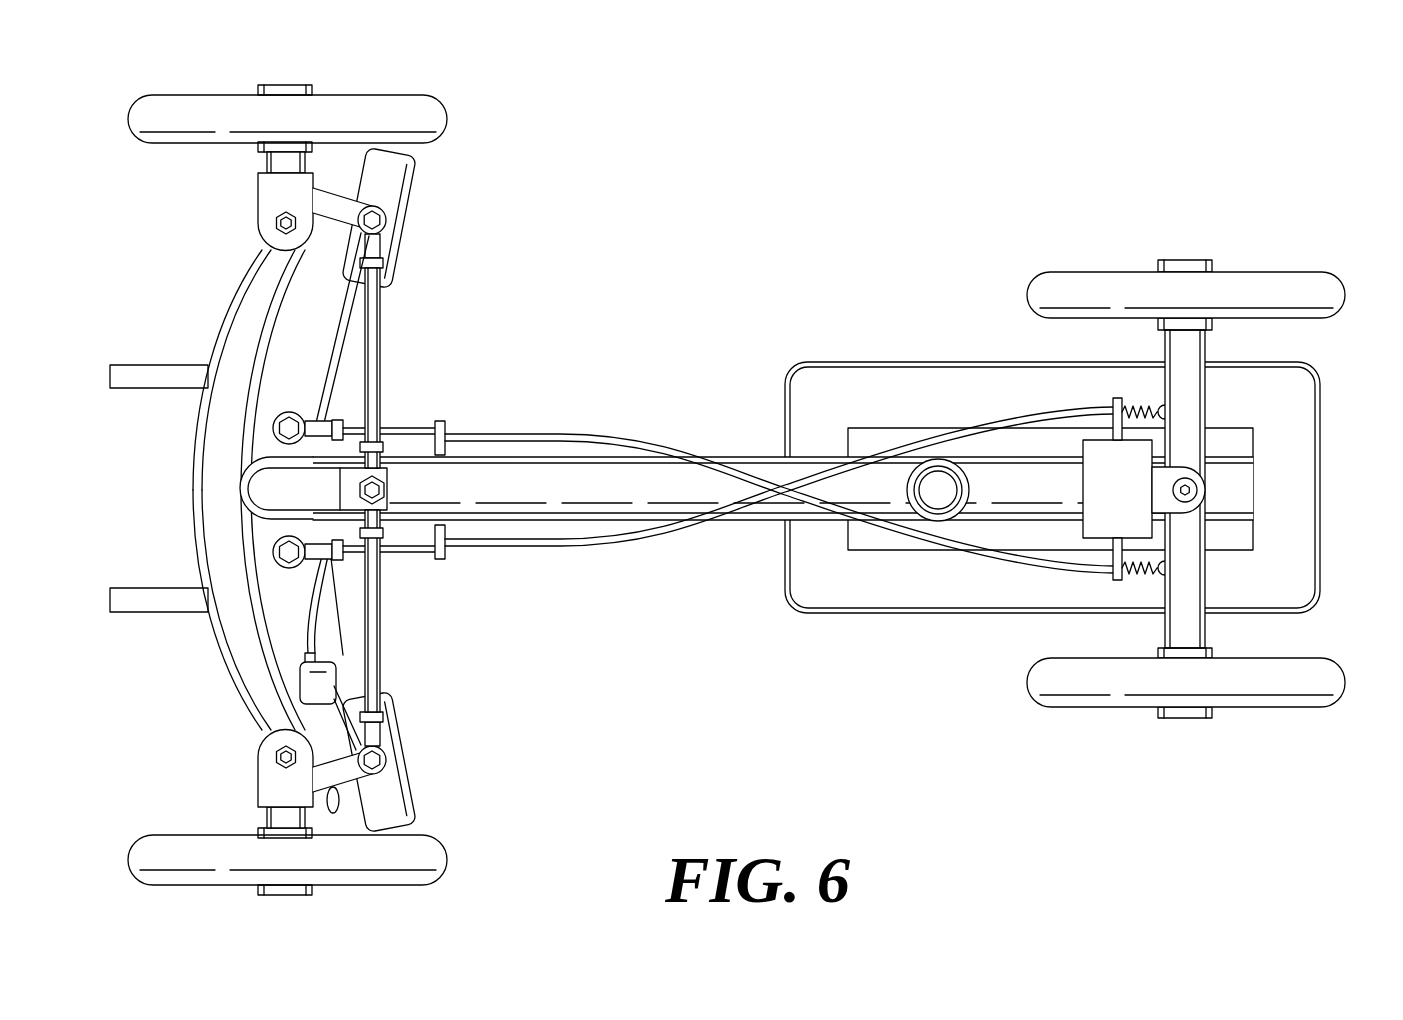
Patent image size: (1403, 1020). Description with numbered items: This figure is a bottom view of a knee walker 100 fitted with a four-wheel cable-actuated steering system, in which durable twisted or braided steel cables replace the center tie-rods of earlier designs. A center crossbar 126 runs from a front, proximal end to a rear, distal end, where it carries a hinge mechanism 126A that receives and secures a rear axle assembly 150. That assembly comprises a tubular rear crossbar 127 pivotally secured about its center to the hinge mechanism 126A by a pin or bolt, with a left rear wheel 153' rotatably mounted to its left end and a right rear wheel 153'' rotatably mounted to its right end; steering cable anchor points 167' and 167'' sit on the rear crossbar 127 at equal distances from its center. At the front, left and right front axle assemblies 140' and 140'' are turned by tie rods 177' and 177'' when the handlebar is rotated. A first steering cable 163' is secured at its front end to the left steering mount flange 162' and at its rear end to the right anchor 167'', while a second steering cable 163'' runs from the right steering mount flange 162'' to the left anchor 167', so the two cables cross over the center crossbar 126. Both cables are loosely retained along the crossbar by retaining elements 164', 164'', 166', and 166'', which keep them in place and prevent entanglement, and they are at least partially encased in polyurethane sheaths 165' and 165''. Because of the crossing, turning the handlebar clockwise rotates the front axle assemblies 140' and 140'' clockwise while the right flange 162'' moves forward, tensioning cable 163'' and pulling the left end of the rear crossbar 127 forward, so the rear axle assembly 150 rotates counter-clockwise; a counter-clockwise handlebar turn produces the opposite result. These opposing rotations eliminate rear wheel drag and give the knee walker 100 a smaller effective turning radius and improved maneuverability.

The knee walker 100 is at (679, 110).
The center crossbar 126 is at (586, 501).
The hinge mechanism 126A is at (1198, 489).
The rear crossbar 127 is at (1187, 386).
The front axle assembly 140' is at (281, 285).
The front axle assembly 140'' is at (280, 694).
The rear axle assembly 150 is at (1222, 579).
The left rear wheel 153' is at (1212, 266).
The right rear wheel 153'' is at (1214, 653).
The left steering mount flange 162' is at (235, 370).
The right steering mount flange 162'' is at (232, 610).
The first steering cable 163' is at (360, 392).
The second steering cable 163'' is at (362, 588).
The retaining element 164' is at (476, 405).
The retaining element 164'' is at (477, 574).
The sheath 165' is at (779, 459).
The sheath 165'' is at (779, 521).
The retaining element 166' is at (1058, 407).
The retaining element 166'' is at (1058, 573).
The steering cable anchor point 167' is at (1122, 370).
The steering cable anchor point 167'' is at (1122, 609).
The tie rod 177' is at (427, 368).
The tie rod 177'' is at (412, 611).